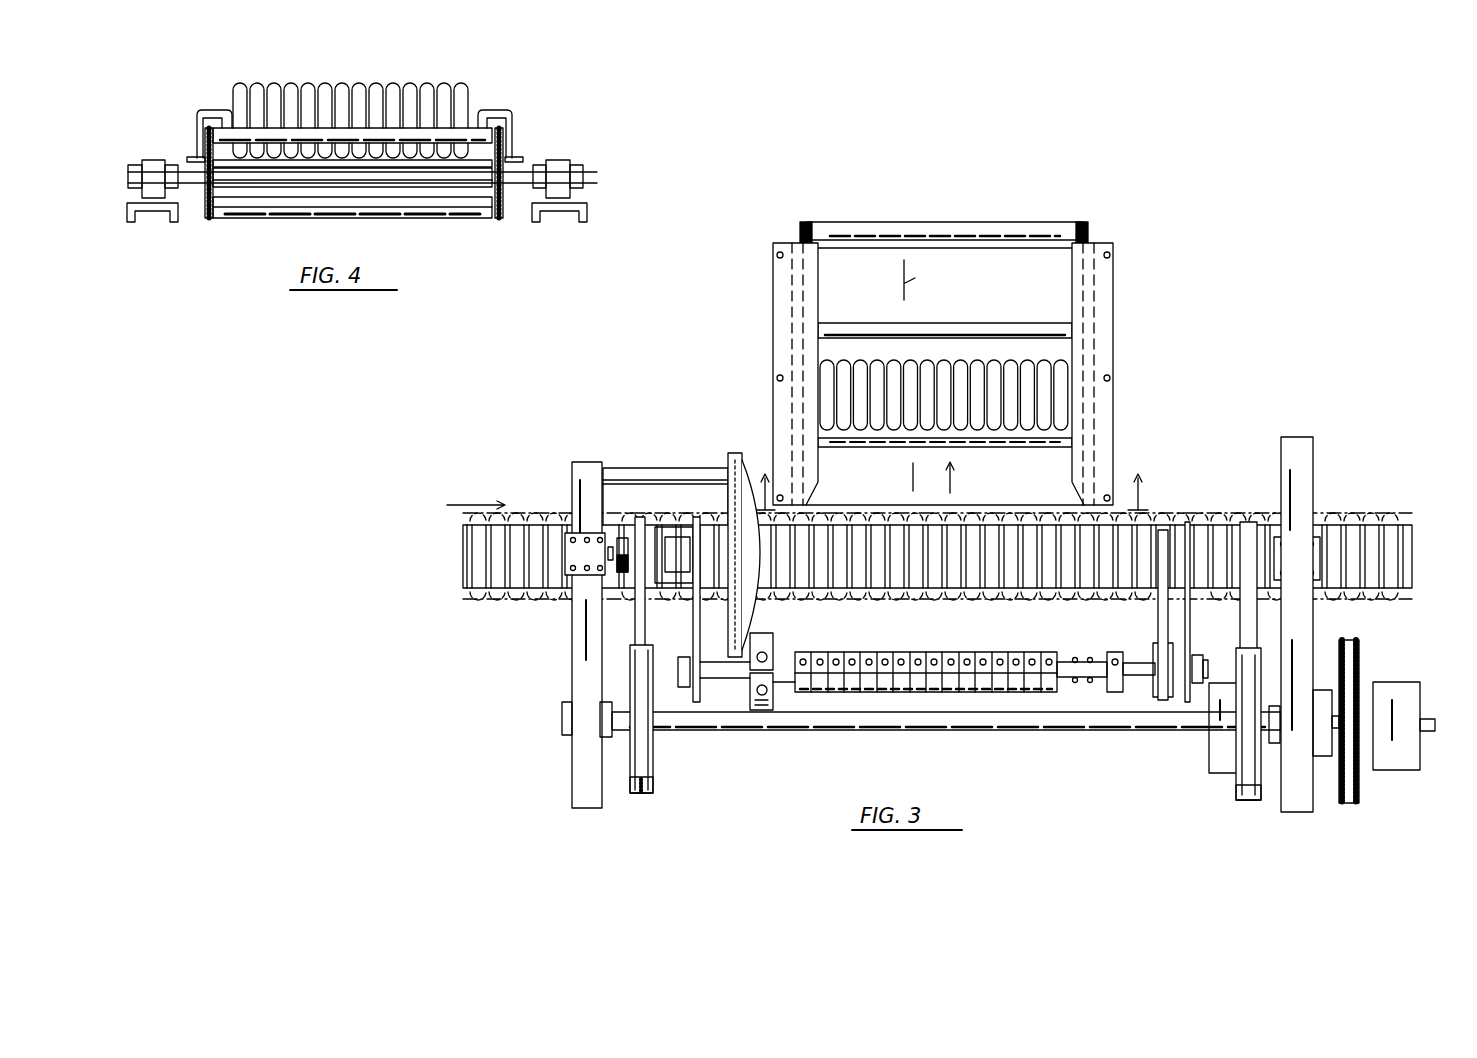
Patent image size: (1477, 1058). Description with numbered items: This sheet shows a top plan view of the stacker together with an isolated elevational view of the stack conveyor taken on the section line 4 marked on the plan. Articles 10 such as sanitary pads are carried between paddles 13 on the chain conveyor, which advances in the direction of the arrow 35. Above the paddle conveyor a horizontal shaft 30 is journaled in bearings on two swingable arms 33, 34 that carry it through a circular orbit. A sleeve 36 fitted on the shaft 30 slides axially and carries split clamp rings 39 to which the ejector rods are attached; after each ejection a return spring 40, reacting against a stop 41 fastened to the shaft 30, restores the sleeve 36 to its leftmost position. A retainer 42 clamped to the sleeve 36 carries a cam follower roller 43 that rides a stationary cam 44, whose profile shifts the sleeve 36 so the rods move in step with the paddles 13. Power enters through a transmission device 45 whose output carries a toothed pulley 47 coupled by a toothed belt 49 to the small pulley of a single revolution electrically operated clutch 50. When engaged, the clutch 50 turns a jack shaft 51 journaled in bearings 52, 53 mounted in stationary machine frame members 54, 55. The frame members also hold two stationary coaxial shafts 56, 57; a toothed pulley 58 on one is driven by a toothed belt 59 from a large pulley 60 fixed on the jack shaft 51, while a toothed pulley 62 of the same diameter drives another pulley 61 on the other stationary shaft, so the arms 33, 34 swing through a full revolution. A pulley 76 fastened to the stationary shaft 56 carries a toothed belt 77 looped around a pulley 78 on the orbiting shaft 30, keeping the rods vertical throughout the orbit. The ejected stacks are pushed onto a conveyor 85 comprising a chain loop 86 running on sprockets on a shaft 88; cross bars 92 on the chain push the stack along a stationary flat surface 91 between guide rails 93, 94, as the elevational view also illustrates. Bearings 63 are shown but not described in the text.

In FIG. 4, the articles 10 is at (438, 84).
In FIG. 3, the articles 10 is at (1063, 382).
In FIG. 3, the paddles 13 is at (490, 565).
In FIG. 3, the shaft 30 is at (1156, 660).
In FIG. 3, the swingable arm 33 is at (696, 612).
In FIG. 3, the swingable arm 34 is at (1196, 685).
In FIG. 3, the arrow 35 is at (466, 505).
In FIG. 3, the sleeve 36 is at (778, 690).
In FIG. 3, the split clamp ring 39 is at (893, 652).
In FIG. 3, the return spring 40 is at (1072, 660).
In FIG. 3, the stop 41 is at (1110, 650).
In FIG. 3, the retainer 42 is at (762, 712).
In FIG. 3, the cam follower roller 43 is at (775, 660).
In FIG. 3, the stationary cam 44 is at (768, 590).
In FIG. 3, the transmission device 45 is at (1210, 770).
In FIG. 3, the toothed pulley 47 is at (1360, 660).
In FIG. 3, the toothed belt 49 is at (1352, 640).
In FIG. 3, the electrically operated clutch 50 is at (1410, 692).
In FIG. 3, the jack shaft 51 is at (897, 733).
In FIG. 3, the bearing 52 is at (1276, 745).
In FIG. 3, the bearing 53 is at (610, 740).
In FIG. 3, the machine frame member 54 is at (1300, 812).
In FIG. 3, the machine frame member 55 is at (572, 780).
In FIG. 3, the stationary shaft 56 is at (1318, 522).
In FIG. 3, the stationary shaft 57 is at (560, 562).
In FIG. 3, the toothed pulley 58 is at (1232, 525).
In FIG. 3, the toothed belt 59 is at (1244, 610).
In FIG. 3, the large pulley 60 is at (1237, 795).
In FIG. 3, the pulley 61 is at (632, 517).
In FIG. 3, the toothed pulley 62 is at (655, 785).
In FIG. 3, the end cap 63 is at (641, 793).
In FIG. 3, the pulley 76 is at (1172, 530).
In FIG. 3, the toothed belt 77 is at (1160, 605).
In FIG. 3, the pulley 78 is at (1156, 697).
In FIG. 4, the conveyor 85 is at (540, 110).
In FIG. 3, the conveyor 85 is at (1120, 323).
In FIG. 4, the chain loop 86 is at (207, 218).
In FIG. 3, the chain loop 86 is at (803, 222).
In FIG. 4, the shaft 88 is at (597, 178).
In FIG. 4, the flat surface 91 is at (285, 165).
In FIG. 3, the flat surface 91 is at (915, 280).
In FIG. 4, the cross bars 92 is at (252, 128).
In FIG. 3, the cross bars 92 is at (950, 222).
In FIG. 4, the guide rail 93 is at (212, 110).
In FIG. 3, the guide rail 93 is at (820, 280).
In FIG. 4, the guide rail 94 is at (497, 110).
In FIG. 3, the guide rail 94 is at (1075, 268).
In FIG. 3, the section line 4- 4 is at (948, 479).